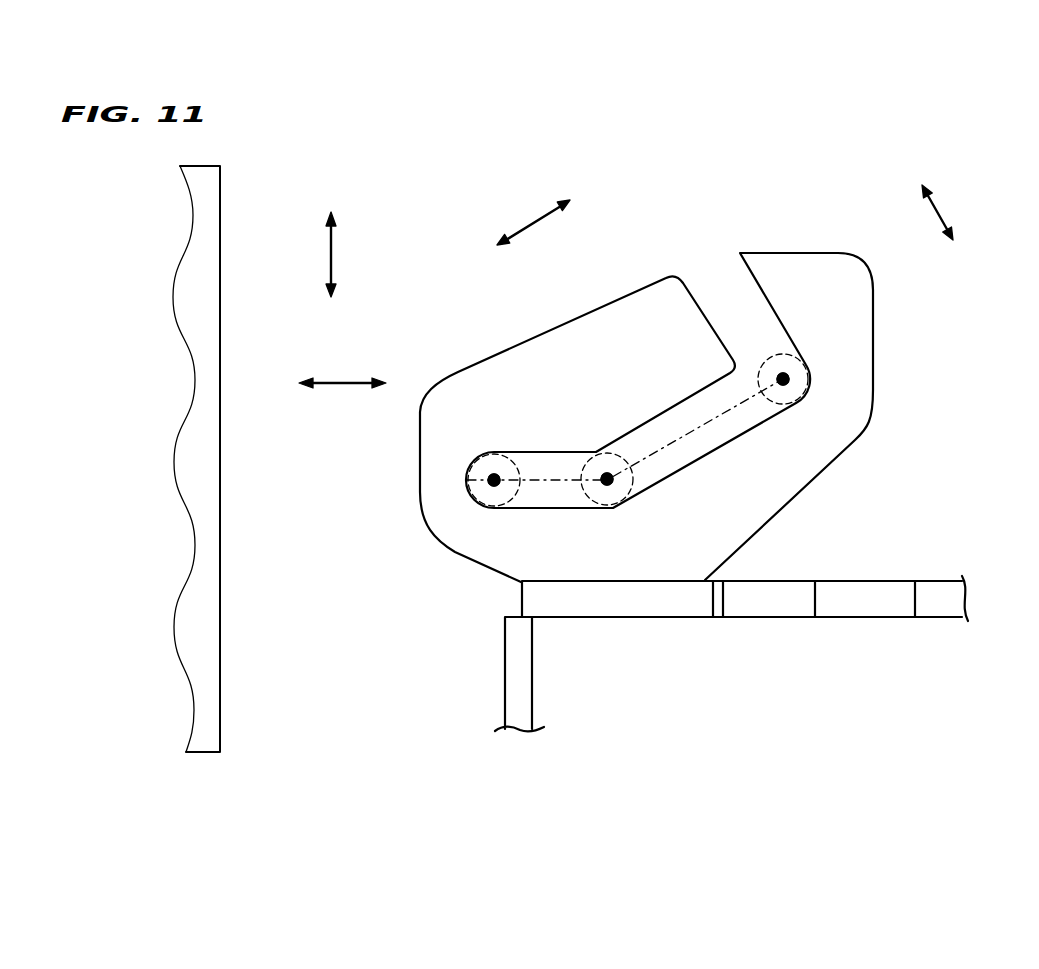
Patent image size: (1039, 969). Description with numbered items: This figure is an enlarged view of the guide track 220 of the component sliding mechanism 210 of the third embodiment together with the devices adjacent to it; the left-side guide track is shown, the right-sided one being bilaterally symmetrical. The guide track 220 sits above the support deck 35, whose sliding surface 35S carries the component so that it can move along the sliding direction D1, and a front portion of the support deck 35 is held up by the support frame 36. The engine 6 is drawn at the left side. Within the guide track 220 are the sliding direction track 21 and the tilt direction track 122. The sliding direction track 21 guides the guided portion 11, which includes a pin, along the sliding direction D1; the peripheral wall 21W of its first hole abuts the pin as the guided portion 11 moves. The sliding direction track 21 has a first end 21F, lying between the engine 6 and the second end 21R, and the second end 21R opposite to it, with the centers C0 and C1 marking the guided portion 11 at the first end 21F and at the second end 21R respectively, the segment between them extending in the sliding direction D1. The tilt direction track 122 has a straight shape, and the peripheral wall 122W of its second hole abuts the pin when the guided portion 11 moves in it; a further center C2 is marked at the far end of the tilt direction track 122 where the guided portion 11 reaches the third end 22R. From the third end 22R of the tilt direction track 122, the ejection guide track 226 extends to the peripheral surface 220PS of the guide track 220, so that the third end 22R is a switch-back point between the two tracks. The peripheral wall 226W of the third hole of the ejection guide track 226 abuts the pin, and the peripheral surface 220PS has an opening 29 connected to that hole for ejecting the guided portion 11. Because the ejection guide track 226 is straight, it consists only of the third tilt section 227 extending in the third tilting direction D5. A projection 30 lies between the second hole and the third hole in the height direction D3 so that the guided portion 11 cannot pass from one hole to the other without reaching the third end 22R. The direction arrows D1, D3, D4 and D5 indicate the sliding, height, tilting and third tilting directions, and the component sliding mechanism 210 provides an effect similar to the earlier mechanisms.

The engine 6 is at (210, 742).
The guided portion 11 is at (487, 506).
The sliding direction track 21 is at (559, 468).
The first end 21F is at (472, 452).
The second end 21R is at (603, 452).
The peripheral wall 21W is at (562, 508).
The third end 22R is at (810, 372).
The opening 29 is at (687, 298).
The projection 30 is at (728, 363).
The support deck 35 is at (897, 598).
The sliding surface 35S is at (950, 580).
The support frame 36 is at (517, 670).
The tilt direction track 122 is at (667, 437).
The peripheral wall 122W is at (662, 471).
The component sliding mechanism 210 is at (851, 723).
The guide track 220 is at (892, 356).
The peripheral surface 220PS is at (808, 253).
The ejection guide track 226 is at (708, 266).
The peripheral wall 226W is at (753, 296).
The third tilt section 227 is at (748, 314).
The center C0 is at (494, 480).
The center C1 is at (607, 479).
The center C2 is at (790, 379).
The sliding direction D1 is at (338, 382).
The height direction D3 is at (331, 257).
The direction D4 is at (523, 226).
The third tilting direction D5 is at (940, 210).